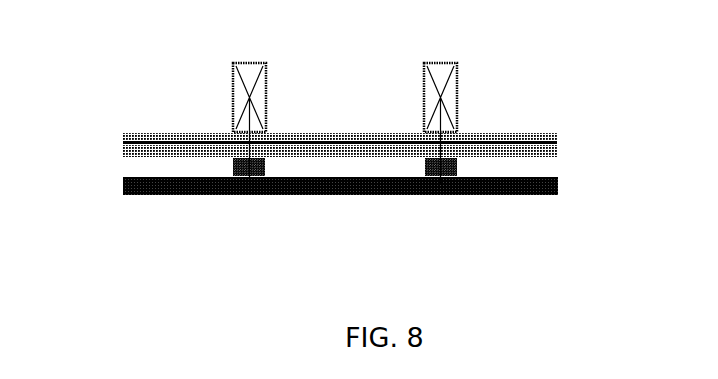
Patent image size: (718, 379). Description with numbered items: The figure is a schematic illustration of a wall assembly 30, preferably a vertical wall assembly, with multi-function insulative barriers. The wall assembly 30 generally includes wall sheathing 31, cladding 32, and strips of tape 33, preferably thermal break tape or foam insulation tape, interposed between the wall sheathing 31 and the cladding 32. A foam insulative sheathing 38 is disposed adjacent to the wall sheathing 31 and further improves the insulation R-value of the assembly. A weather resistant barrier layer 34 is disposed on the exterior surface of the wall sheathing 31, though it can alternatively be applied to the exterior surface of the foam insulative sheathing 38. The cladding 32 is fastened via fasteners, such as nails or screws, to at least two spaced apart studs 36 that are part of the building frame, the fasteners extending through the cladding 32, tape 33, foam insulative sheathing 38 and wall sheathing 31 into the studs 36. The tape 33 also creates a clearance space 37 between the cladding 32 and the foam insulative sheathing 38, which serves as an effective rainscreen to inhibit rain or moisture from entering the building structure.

The wall assembly 30 is at (142, 80).
The wall sheathing 31 is at (547, 133).
The cladding 32 is at (488, 195).
The strips of tape 33 is at (460, 167).
The weather resistant barrier layer 34 is at (558, 143).
The studs 36 is at (458, 82).
The clearance space 37 is at (130, 165).
The foam insulative sheathing 38 is at (558, 152).